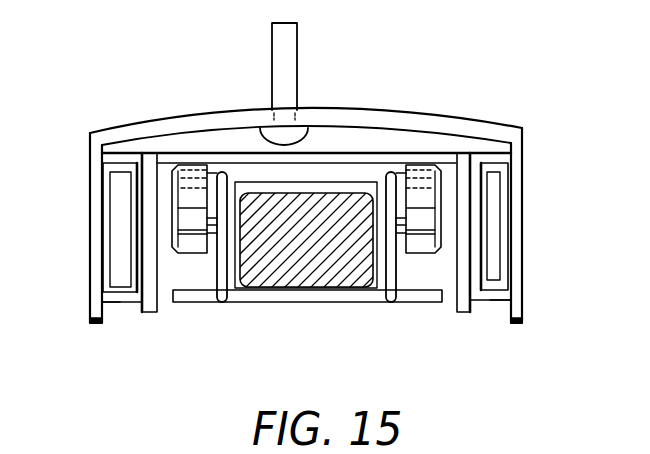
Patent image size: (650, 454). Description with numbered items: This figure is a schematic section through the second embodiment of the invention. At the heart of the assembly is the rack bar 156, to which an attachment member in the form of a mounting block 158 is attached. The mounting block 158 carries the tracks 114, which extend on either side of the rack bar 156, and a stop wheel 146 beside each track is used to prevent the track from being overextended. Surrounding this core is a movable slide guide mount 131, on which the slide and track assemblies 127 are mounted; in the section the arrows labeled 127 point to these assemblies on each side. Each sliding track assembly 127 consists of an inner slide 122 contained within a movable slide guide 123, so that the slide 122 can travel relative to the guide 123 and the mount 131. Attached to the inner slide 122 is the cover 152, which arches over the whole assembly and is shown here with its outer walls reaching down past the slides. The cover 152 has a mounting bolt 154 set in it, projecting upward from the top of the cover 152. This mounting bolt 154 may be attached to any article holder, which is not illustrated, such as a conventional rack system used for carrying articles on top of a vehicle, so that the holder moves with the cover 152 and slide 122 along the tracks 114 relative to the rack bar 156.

The track 114 is at (222, 302).
The inner slide 122 is at (108, 228).
The movable slide guide 123 is at (120, 304).
The slide and track assembly 127 is at (140, 338).
The movable slide guide mount 131 is at (457, 302).
The stop wheel 146 is at (193, 238).
The cover 152 is at (460, 120).
The mounting bolt 154 is at (298, 78).
The rack bar 156 is at (277, 272).
The mounting block 158 is at (363, 296).